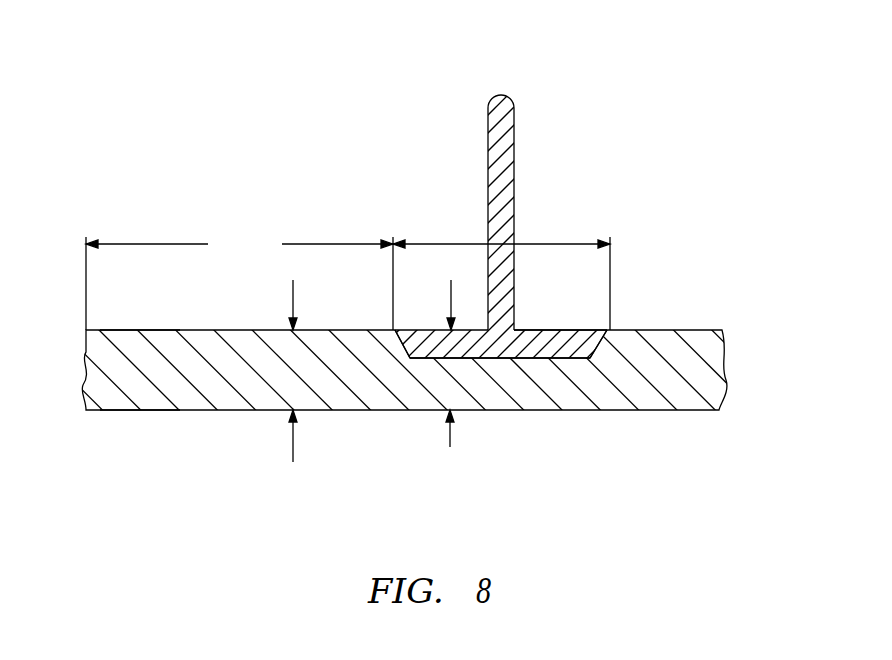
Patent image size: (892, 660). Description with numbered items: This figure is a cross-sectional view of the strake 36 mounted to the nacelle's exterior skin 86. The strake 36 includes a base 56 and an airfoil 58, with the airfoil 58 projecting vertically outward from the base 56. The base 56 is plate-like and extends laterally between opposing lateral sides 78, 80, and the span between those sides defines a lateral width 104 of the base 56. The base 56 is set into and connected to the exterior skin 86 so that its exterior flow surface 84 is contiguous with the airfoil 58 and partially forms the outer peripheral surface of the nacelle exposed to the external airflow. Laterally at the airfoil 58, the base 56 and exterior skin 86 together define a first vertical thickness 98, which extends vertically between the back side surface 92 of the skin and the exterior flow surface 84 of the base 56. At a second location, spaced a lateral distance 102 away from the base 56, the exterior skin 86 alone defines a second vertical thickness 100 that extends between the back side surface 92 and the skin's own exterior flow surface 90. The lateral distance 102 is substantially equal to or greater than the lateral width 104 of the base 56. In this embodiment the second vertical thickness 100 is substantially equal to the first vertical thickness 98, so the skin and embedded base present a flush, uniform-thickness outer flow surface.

The strake 36 is at (514, 92).
The airfoil 58 is at (489, 149).
The lateral width 104 is at (573, 243).
The lateral distance 102 is at (239, 280).
The exterior flow surface 90 is at (140, 330).
The lateral side 80 is at (402, 342).
The exterior flow surface 84 is at (560, 330).
The exterior skin 86 is at (702, 328).
The base 56 is at (558, 370).
The lateral side 78 is at (600, 352).
The back side surface 92 is at (133, 412).
The second vertical thickness 100 is at (293, 440).
The first vertical thickness 98 is at (450, 447).